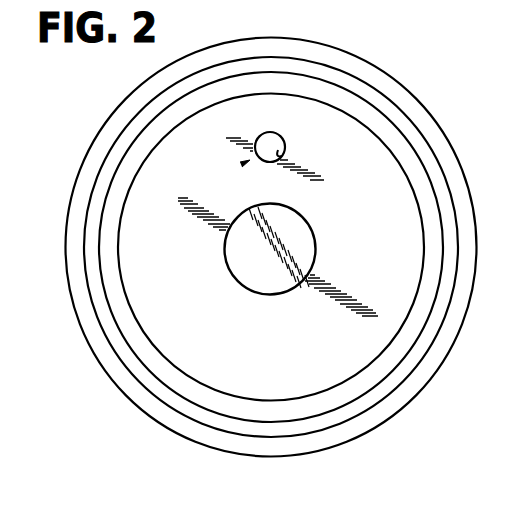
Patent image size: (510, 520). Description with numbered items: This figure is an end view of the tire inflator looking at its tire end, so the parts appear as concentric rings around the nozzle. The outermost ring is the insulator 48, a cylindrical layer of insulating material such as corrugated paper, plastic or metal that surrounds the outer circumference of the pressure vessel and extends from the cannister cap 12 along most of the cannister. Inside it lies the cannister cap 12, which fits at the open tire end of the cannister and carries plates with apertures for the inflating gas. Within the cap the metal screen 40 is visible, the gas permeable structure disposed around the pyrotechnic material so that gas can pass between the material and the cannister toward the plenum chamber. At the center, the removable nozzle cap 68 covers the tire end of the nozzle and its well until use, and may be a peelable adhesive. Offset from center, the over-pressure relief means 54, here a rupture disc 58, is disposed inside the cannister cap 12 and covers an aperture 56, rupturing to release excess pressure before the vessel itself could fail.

The cannister cap 12 is at (286, 348).
The metal screen 40 is at (138, 335).
The insulator 48 is at (117, 112).
The over-pressure relief means 54 is at (251, 159).
The aperture 56 is at (278, 150).
The rupture disc 58 is at (262, 143).
The nozzle cap 68 is at (303, 230).